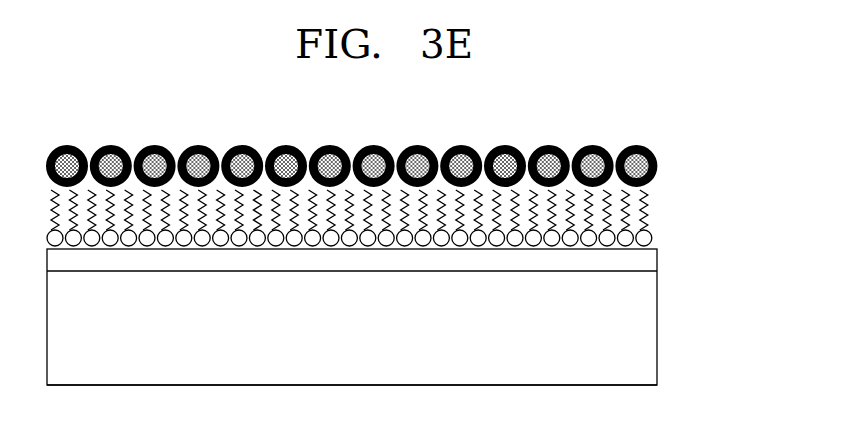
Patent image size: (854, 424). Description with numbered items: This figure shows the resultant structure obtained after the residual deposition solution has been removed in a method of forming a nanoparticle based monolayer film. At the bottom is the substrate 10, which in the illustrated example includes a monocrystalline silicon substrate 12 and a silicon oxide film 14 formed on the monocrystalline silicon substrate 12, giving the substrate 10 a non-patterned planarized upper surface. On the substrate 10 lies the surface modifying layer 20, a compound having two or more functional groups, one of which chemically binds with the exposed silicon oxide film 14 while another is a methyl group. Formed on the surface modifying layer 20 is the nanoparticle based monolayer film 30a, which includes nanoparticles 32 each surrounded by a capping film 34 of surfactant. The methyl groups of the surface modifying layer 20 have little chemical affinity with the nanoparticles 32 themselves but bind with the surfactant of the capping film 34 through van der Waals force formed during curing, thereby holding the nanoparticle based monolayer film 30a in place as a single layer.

The substrate 10 is at (407, 317).
The monocrystalline silicon substrate 12 is at (382, 350).
The silicon oxide film 14 is at (645, 260).
The surface modifying layer 20 is at (652, 208).
The nanoparticle based monolayer film 30a is at (414, 158).
The nanoparticles 32 is at (652, 153).
The capping film 34 is at (657, 170).